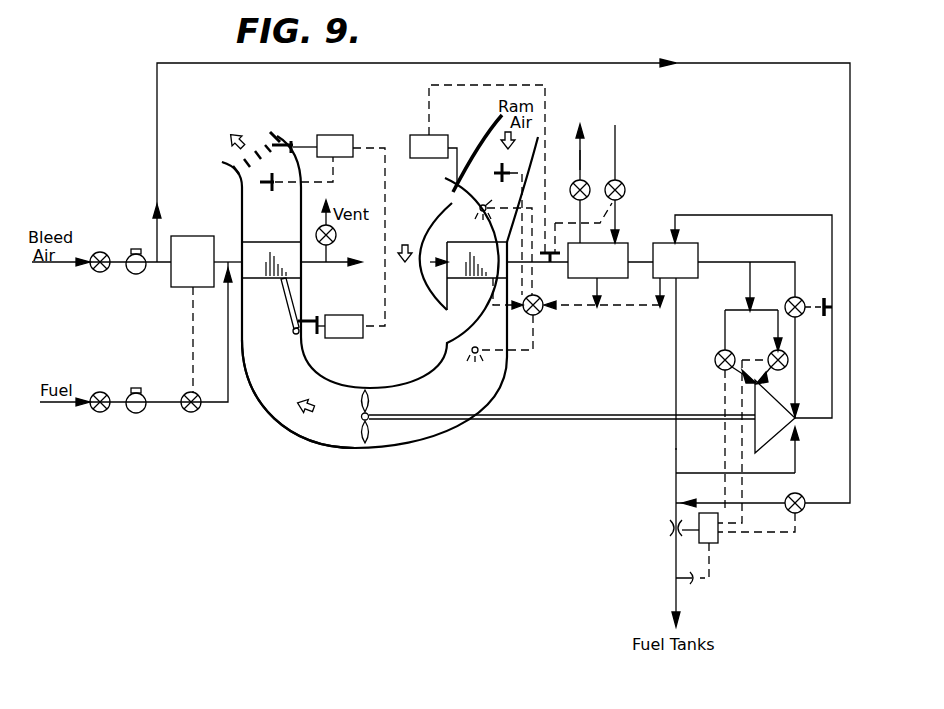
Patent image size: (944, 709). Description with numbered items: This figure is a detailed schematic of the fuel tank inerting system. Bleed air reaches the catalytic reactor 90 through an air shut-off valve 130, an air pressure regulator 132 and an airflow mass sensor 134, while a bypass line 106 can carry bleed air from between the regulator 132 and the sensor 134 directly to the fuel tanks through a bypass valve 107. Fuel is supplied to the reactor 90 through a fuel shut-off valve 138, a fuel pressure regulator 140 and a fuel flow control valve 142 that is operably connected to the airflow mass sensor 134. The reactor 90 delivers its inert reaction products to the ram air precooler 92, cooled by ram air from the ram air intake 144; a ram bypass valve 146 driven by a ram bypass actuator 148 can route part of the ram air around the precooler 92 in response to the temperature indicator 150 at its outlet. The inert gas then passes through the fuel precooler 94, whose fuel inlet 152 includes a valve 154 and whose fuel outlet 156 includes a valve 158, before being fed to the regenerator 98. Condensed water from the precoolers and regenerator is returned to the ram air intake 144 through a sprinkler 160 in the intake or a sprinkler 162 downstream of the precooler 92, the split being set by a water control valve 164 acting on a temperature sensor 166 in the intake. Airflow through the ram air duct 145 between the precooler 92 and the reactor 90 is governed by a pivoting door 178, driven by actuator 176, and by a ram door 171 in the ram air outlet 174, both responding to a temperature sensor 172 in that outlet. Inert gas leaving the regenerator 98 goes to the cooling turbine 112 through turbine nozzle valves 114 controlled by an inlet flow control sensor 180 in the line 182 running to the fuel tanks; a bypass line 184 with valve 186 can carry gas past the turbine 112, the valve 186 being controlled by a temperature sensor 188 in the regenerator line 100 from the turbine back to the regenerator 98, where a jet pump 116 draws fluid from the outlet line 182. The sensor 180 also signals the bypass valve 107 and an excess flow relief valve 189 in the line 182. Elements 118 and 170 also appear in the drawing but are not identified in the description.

The catalytic reactor 90 is at (250, 236).
The ram air precooler 92 is at (477, 250).
The fuel precooler 94 is at (626, 243).
The regenerator 98 is at (699, 248).
The regenerator line 100 is at (794, 215).
The bypass line 106 is at (616, 63).
The bypass valve 107 is at (803, 496).
The cooling turbine 112 is at (775, 416).
The turbine nozzle valves 114 is at (741, 436).
The jet pump 116 is at (816, 410).
The fan 118 is at (367, 443).
The air shut-off valve 130 is at (100, 251).
The air pressure regulator 132 is at (134, 249).
The airflow mass sensor 134 is at (178, 289).
The fuel shut-off valve 138 is at (104, 392).
The fuel pressure regulator 140 is at (168, 376).
The fuel flow control valve 142 is at (184, 411).
The ram air intake 144 is at (482, 140).
The ram air duct 145 is at (290, 432).
The ram bypass valve 146 is at (445, 178).
The ram bypass actuator 148 is at (433, 160).
The temperature indicator 150 is at (549, 268).
The fuel inlet 152 is at (618, 152).
The valve 154 is at (626, 188).
The fuel outlet 156 is at (585, 150).
The valve 158 is at (572, 186).
The sprinkler 160 is at (497, 242).
The sprinkler 162 is at (476, 346).
The water control valve 164 is at (541, 312).
The temperature sensor 166 is at (505, 165).
The controller 170 is at (351, 230).
The ram door 171 is at (226, 162).
The temperature sensor 172 is at (269, 192).
The ram air outlet 174 is at (301, 202).
The actuator 176 is at (344, 326).
The pivoting door 178 is at (292, 330).
The inlet flow control sensor 180 is at (718, 542).
The line 182 is at (676, 449).
The bypass line 184 is at (787, 262).
The turbine bypass valve 186 is at (803, 298).
The temperature sensor 188 is at (820, 320).
The excess flow relief valve 189 is at (702, 584).